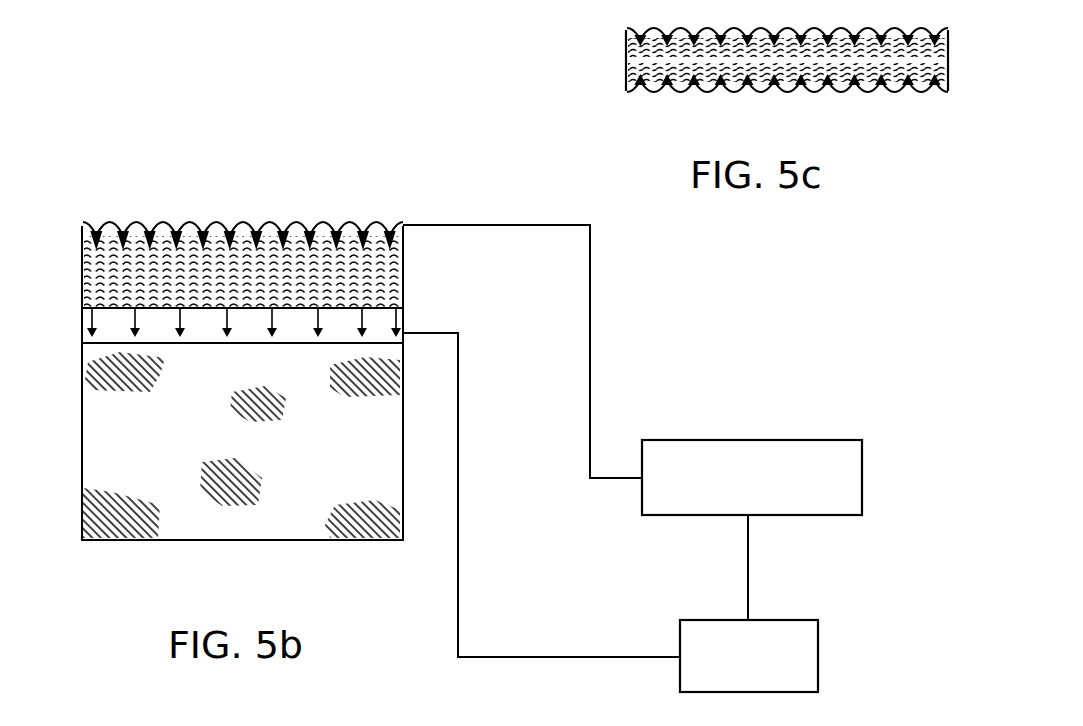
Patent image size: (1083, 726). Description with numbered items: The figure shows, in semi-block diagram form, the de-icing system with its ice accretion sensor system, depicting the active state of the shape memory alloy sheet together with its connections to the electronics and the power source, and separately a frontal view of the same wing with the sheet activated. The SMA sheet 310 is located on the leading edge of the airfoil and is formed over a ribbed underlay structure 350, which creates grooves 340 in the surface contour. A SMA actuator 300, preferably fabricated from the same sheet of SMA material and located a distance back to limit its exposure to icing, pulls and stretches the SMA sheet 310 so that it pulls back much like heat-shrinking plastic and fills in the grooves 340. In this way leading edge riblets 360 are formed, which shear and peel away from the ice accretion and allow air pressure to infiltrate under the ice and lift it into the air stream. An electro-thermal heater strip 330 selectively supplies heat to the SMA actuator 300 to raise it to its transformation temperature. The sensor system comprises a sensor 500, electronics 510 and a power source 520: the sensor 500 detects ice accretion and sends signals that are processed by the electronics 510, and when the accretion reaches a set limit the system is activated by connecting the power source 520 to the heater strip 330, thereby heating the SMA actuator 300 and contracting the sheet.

The SMA sheet 310 is at (72, 228).
The grooves 340 is at (370, 227).
The leading edge riblets 360 is at (329, 225).
The ribbed underlay structure 350 is at (243, 227).
The SMA actuator 300 is at (398, 323).
The electro-thermal heater strip 330 is at (541, 464).
The sensor 500 is at (405, 226).
The electronics 510 is at (830, 440).
The power source 520 is at (820, 657).